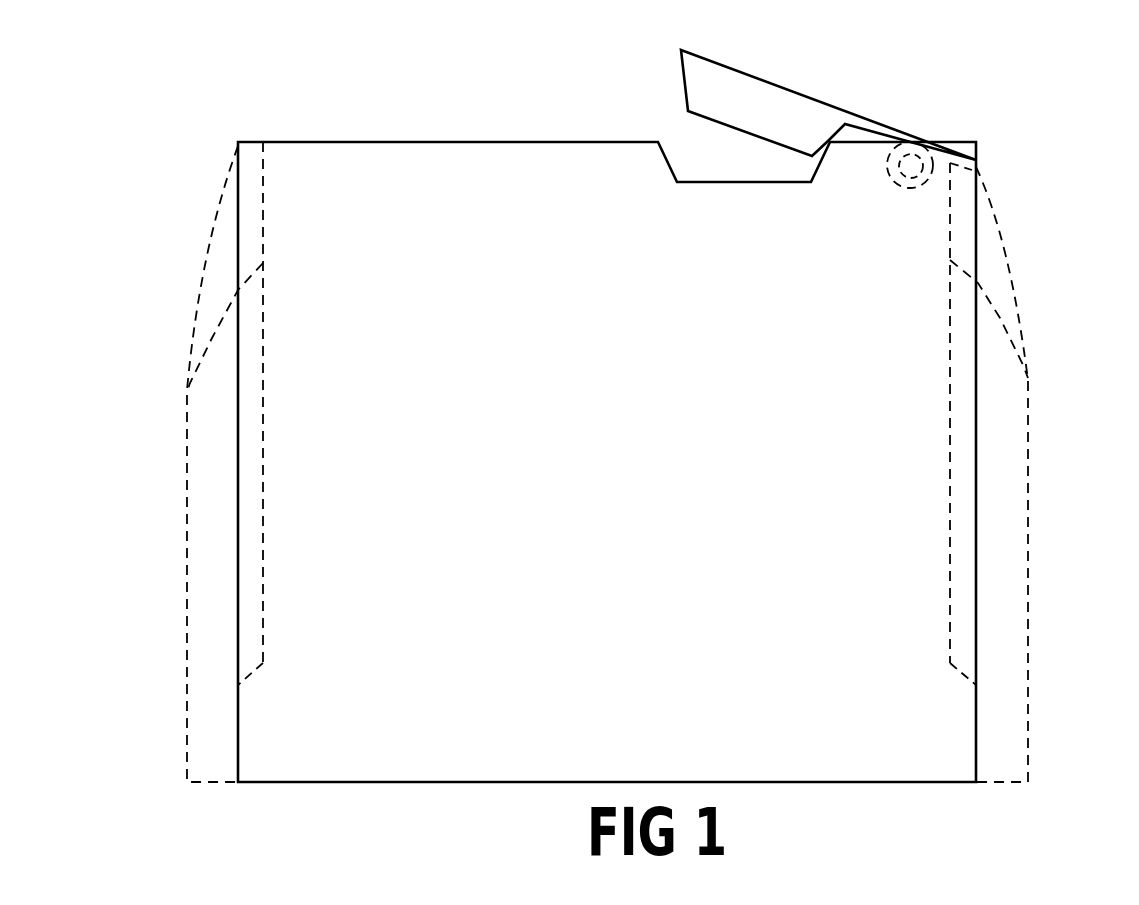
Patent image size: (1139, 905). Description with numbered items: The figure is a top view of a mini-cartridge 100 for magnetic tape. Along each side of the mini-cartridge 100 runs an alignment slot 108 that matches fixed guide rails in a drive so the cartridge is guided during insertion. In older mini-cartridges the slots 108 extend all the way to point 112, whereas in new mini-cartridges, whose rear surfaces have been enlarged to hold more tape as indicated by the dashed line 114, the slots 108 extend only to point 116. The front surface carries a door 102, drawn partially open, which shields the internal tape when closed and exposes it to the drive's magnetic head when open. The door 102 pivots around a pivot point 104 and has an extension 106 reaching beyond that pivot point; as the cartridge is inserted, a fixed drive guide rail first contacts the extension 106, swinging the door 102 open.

The mini-cartridge 100 is at (613, 501).
The door 102 is at (743, 73).
The pivot point 104 is at (905, 182).
The extension 106 is at (978, 167).
The alignment slot 108 is at (262, 217).
The point 112 is at (263, 672).
The dashed line 114 is at (1025, 500).
The point 116 is at (263, 263).